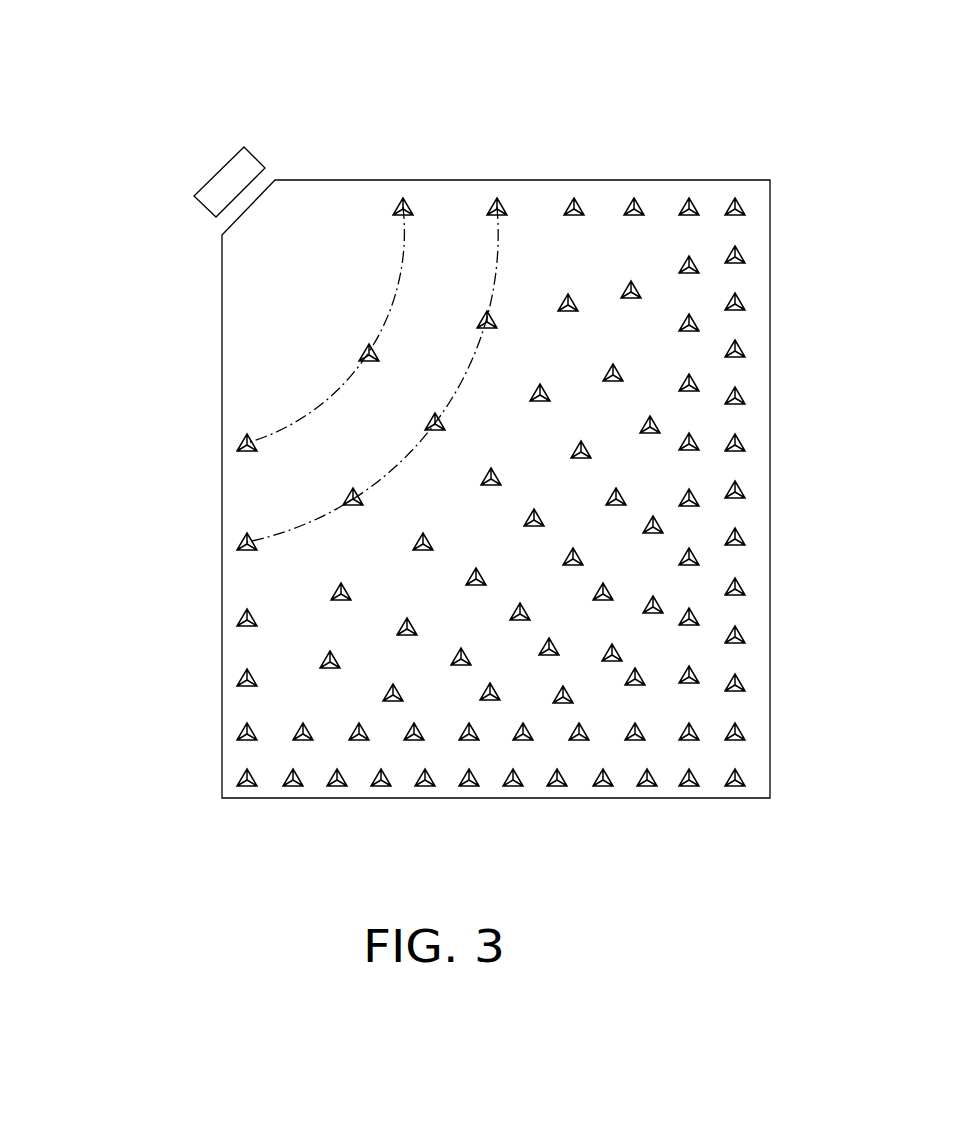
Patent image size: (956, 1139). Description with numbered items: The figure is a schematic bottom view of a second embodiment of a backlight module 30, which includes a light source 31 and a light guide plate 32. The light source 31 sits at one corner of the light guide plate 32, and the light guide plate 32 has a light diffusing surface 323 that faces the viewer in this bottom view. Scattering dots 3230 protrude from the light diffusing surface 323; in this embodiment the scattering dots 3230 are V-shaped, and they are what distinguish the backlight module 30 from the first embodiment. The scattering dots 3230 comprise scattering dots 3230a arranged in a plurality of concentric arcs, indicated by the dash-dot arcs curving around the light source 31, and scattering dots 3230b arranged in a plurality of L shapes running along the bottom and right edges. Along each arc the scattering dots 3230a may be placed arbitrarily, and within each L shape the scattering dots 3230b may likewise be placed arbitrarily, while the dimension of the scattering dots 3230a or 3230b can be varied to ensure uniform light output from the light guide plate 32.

The backlight module 30 is at (477, 53).
The light source 31 is at (227, 180).
The light guide plate 32 is at (793, 202).
The light diffusing surface 323 is at (757, 283).
The scattering dots 3230 is at (98, 392).
The scattering dots arranged in concentric arcs 3230a is at (245, 440).
The scattering dots arranged in L shapes 3230b is at (243, 775).